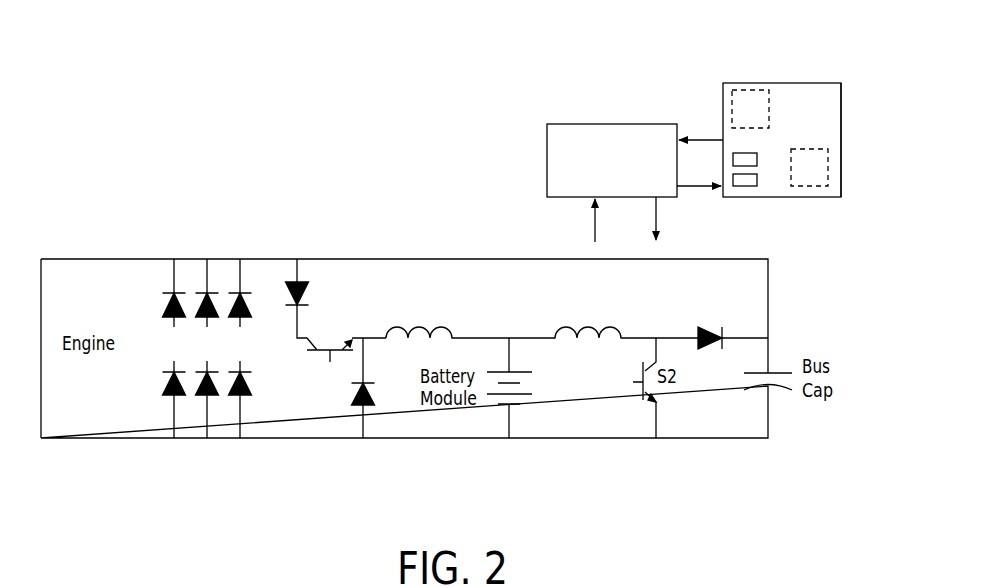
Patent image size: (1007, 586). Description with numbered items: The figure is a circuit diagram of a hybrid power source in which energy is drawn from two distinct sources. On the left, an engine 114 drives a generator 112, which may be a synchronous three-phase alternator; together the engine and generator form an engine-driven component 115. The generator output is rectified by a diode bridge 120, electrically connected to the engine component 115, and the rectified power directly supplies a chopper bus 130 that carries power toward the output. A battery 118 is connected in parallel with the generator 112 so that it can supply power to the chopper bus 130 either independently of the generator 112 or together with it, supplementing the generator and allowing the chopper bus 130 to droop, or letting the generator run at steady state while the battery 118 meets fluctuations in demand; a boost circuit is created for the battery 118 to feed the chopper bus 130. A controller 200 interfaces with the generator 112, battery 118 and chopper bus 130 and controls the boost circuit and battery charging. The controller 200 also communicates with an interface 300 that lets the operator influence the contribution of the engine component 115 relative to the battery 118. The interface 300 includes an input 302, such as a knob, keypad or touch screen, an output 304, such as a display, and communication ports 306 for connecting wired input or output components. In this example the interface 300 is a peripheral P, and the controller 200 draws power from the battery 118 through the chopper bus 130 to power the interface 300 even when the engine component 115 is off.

The engine component 115 is at (105, 256).
The engine 114 is at (135, 280).
The generator 112 is at (218, 270).
The chopper bus 130 is at (348, 256).
The diode bridge 120 is at (248, 406).
The battery 118 is at (402, 408).
The controller 200 is at (605, 143).
The interface 300 is at (760, 70).
The input 302 is at (745, 100).
The output 304 is at (802, 175).
The communication ports 306 is at (746, 190).
The peripheral P is at (847, 91).